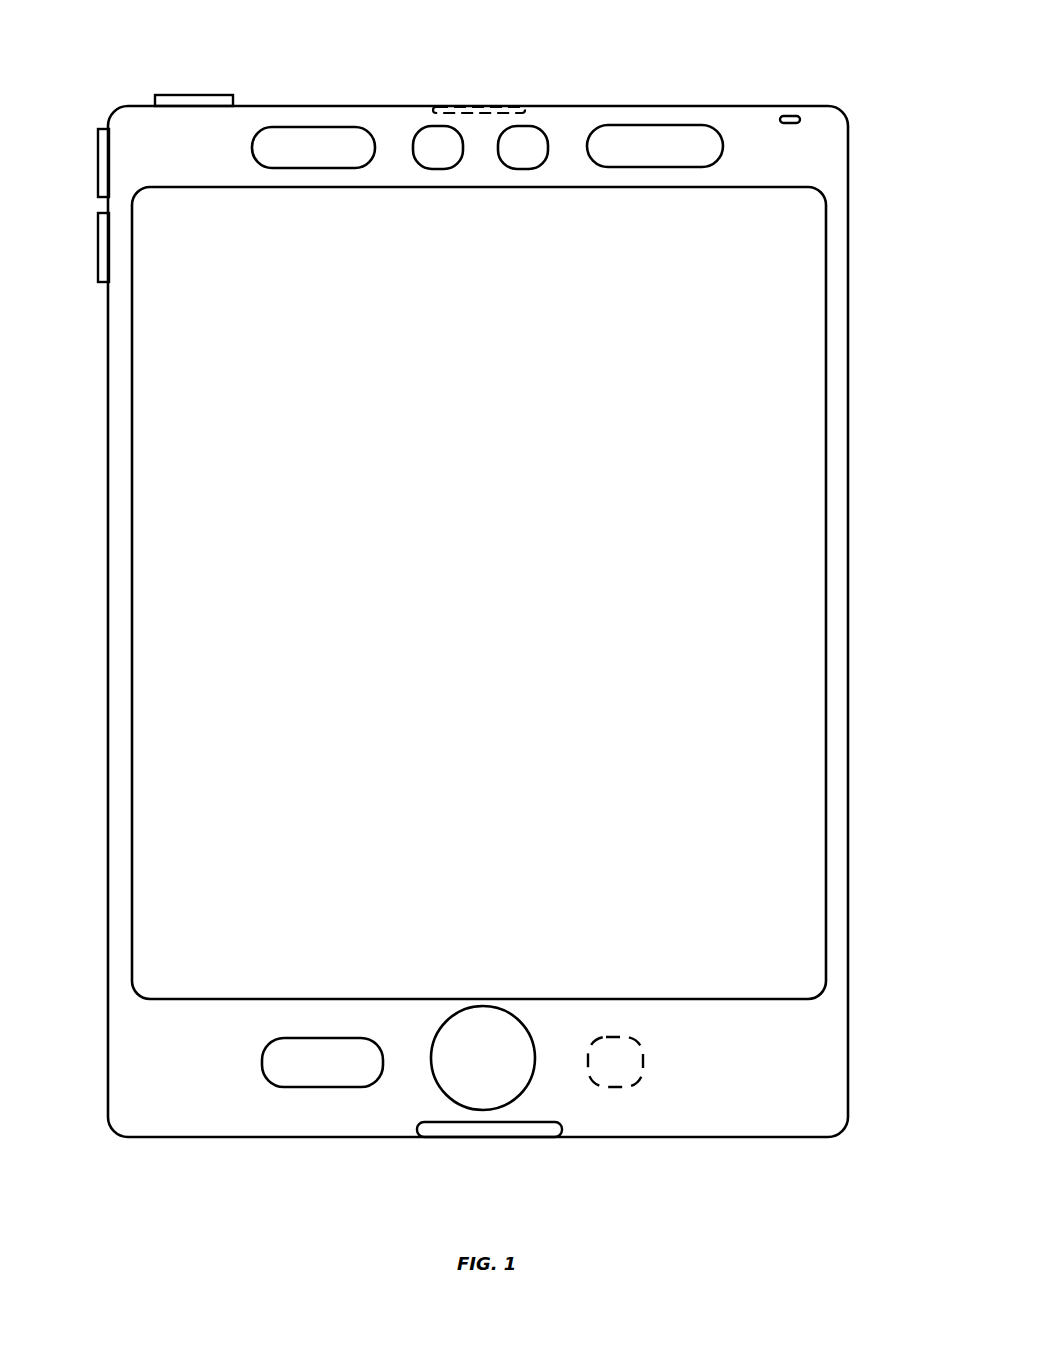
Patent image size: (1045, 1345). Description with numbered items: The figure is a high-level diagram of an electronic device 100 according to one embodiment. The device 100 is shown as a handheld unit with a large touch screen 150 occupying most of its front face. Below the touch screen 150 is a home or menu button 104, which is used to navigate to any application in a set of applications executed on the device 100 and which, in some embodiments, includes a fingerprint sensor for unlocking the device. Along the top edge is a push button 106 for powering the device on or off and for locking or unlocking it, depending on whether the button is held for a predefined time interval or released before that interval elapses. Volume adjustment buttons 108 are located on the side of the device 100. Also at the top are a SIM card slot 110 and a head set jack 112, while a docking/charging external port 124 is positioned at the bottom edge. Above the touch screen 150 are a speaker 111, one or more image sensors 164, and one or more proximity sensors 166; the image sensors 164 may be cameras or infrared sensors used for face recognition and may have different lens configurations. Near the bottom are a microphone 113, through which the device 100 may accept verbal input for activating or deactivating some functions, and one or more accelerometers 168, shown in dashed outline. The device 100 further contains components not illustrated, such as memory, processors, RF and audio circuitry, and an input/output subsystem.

The electronic device 100 is at (882, 104).
The menu button 104 is at (483, 1058).
The push button 106 is at (196, 94).
The volume adjustment buttons 108 is at (98, 160).
The SIM card slot 110 is at (478, 106).
The speaker 111 is at (313, 147).
The head set jack 112 is at (790, 115).
The microphone 113 is at (322, 1062).
The docking/charging external port 124 is at (490, 1138).
The touch screen 150 is at (826, 484).
The image sensors 164 is at (480, 147).
The proximity sensors 166 is at (655, 146).
The accelerometers 168 is at (615, 1062).